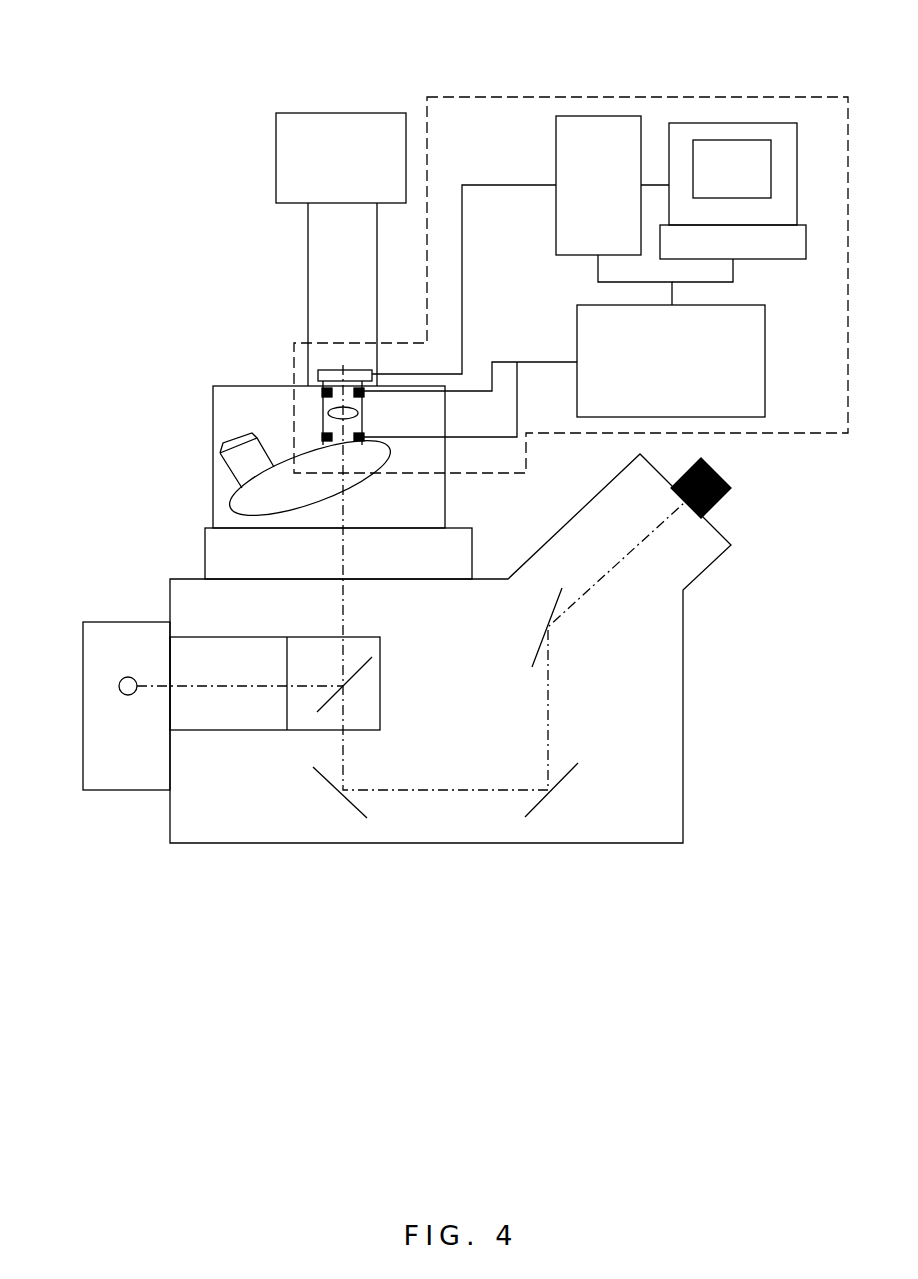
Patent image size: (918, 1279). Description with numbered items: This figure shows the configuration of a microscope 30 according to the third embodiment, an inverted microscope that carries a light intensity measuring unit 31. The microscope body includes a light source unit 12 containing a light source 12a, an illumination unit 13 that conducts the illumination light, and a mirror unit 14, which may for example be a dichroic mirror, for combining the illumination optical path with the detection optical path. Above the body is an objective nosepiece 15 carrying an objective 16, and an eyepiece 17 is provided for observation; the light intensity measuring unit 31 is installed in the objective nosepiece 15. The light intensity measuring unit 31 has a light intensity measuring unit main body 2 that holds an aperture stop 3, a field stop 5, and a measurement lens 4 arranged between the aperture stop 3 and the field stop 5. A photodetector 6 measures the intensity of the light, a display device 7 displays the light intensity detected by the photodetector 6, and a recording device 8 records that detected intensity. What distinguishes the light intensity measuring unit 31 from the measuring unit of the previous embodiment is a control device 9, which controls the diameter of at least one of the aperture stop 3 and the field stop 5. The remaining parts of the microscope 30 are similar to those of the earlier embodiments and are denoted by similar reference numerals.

The light intensity measuring unit main body 2 is at (318, 409).
The aperture stop 3 is at (364, 442).
The measurement lens 4 is at (364, 413).
The field stop 5 is at (364, 393).
The photodetector 6 is at (358, 377).
The display device 7 is at (798, 163).
The recording device 8 is at (556, 225).
The control device 9 is at (765, 373).
The light source unit 12 is at (82, 711).
The light source 12a is at (128, 697).
The illumination unit 13 is at (233, 731).
The mirror unit 14 is at (380, 698).
The objective nosepiece 15 is at (230, 509).
The objective 16 is at (230, 471).
The eyepiece 17 is at (717, 473).
The microscope 30 is at (817, 36).
The light intensity measuring unit 31 is at (663, 92).